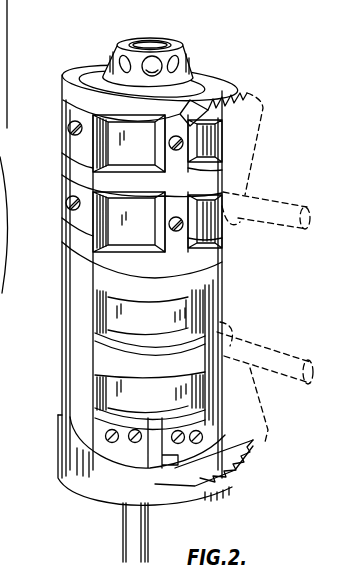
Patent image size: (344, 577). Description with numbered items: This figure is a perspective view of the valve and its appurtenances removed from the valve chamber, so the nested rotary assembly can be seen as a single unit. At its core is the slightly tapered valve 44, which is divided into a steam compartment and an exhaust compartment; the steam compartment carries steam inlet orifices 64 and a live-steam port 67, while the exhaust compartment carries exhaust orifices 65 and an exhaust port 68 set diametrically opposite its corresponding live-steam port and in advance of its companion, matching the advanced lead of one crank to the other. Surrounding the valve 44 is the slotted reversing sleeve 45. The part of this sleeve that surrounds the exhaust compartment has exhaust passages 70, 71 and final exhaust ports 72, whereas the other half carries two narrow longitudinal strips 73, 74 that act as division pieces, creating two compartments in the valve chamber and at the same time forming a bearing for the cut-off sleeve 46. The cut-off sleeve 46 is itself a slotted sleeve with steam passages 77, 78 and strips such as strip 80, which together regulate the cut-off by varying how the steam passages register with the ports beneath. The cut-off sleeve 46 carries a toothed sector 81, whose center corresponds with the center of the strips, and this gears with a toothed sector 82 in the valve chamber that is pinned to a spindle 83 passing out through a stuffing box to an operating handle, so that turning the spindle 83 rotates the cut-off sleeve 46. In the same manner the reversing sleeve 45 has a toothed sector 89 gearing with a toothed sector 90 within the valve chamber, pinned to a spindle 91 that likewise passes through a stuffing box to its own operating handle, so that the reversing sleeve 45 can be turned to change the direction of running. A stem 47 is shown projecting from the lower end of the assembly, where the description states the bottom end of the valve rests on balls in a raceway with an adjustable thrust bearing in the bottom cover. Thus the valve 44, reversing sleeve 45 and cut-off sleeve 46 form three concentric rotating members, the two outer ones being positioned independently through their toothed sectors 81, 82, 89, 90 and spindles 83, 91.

The valve 44 is at (148, 316).
The reversing sleeve 45 is at (145, 460).
The cut-off sleeve 46 is at (150, 92).
The stem 47 is at (148, 534).
The steam inlet orifices 64 is at (156, 62).
The exhaust orifices 65 is at (137, 432).
The live-steam port 67 is at (115, 212).
The exhaust port 68 is at (190, 314).
The exhaust passage 70 is at (150, 355).
The exhaust passage 71 is at (122, 418).
The final exhaust ports 72 is at (60, 411).
The longitudinal strip 73 is at (80, 143).
The longitudinal strip 74 is at (222, 138).
The steam passage 77 is at (122, 167).
The steam passage 78 is at (224, 245).
The strip 80 is at (180, 183).
The toothed sector 81 is at (220, 89).
The toothed sector 82 is at (266, 110).
The spindle 83 is at (266, 210).
The toothed sector 89 is at (232, 466).
The toothed sector 90 is at (269, 412).
The spindle 91 is at (265, 353).